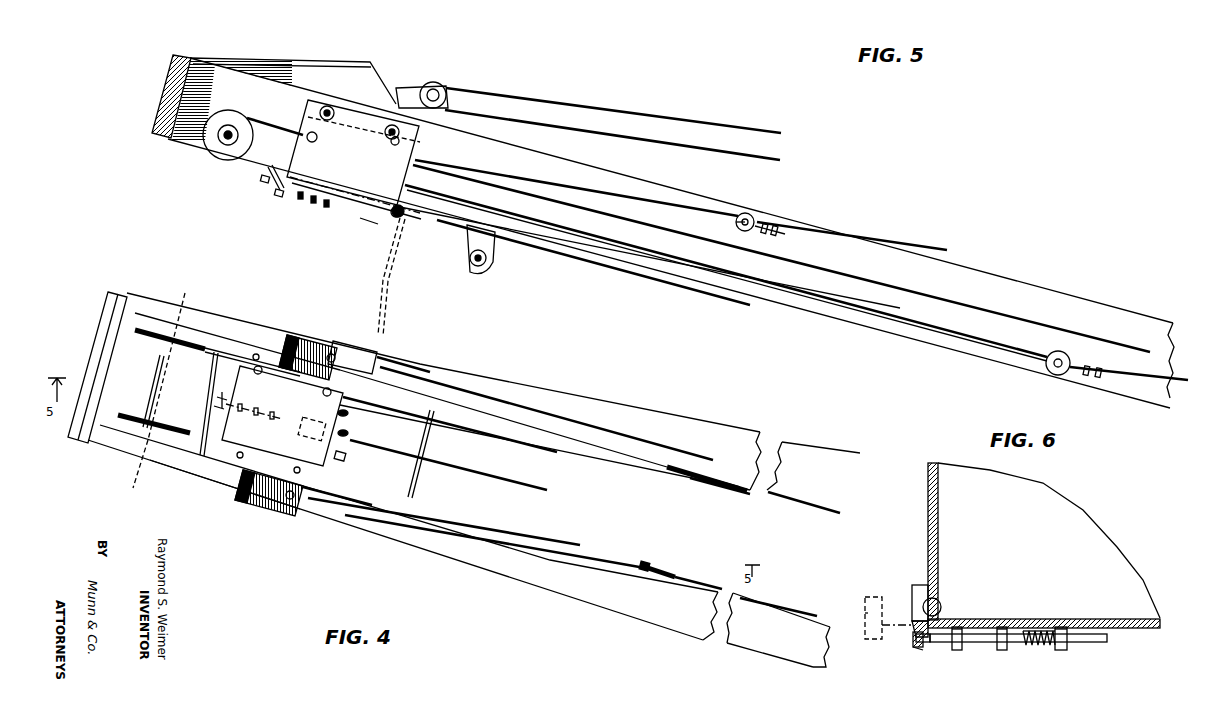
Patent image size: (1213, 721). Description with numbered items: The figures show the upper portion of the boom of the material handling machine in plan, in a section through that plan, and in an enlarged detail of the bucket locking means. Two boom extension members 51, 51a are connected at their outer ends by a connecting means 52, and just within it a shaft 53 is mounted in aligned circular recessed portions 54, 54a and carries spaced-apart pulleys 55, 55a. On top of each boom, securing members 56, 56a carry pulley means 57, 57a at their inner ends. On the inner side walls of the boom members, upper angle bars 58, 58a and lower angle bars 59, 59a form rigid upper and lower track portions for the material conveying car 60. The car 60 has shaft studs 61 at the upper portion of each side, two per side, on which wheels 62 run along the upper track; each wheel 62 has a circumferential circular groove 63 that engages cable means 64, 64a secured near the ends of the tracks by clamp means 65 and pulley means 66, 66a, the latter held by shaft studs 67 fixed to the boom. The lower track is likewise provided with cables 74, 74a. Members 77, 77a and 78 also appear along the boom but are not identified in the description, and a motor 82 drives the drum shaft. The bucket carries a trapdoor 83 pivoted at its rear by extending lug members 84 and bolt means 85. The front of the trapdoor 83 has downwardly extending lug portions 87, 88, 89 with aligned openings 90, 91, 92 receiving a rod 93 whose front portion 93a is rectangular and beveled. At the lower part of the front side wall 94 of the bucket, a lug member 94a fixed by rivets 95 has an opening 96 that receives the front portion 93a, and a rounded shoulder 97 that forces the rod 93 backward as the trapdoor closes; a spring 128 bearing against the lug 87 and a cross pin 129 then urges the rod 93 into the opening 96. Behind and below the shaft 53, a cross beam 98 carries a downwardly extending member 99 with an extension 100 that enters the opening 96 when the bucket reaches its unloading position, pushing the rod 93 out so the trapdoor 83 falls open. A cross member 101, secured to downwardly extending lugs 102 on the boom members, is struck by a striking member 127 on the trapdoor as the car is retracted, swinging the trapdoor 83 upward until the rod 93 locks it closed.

In FIG. 4, the boom extension member 51 is at (592, 601).
In FIG. 5, the boom extension member 51a is at (1034, 300).
In FIG. 4, the boom extension member 51a is at (632, 420).
In FIG. 5, the connecting means 52 is at (165, 90).
In FIG. 4, the connecting means 52 is at (100, 361).
In FIG. 5, the shaft 53 is at (230, 125).
In FIG. 4, the shaft 53 is at (158, 390).
In FIG. 4, the circular recessed portion 54 is at (140, 472).
In FIG. 4, the circular recessed portion 54a is at (174, 357).
In FIG. 4, the pulley 55 is at (116, 423).
In FIG. 5, the pulley 55a is at (222, 152).
In FIG. 4, the pulley 55a is at (150, 330).
In FIG. 4, the securing member 56 is at (195, 478).
In FIG. 5, the securing member 56a is at (296, 60).
In FIG. 4, the securing member 56a is at (224, 336).
In FIG. 4, the pulley means 57 is at (318, 510).
In FIG. 5, the pulley means 57a is at (434, 82).
In FIG. 4, the pulley means 57a is at (350, 356).
In FIG. 4, the upper angle bar 58 is at (602, 558).
In FIG. 5, the upper angle bar 58a is at (632, 195).
In FIG. 4, the upper angle bar 58a is at (617, 460).
In FIG. 4, the lower angle bar 59 is at (710, 580).
In FIG. 5, the lower angle bar 59a is at (846, 308).
In FIG. 4, the lower angle bar 59a is at (727, 488).
In FIG. 5, the car 60 is at (352, 160).
In FIG. 5, the shaft stud 61 is at (328, 106).
In FIG. 4, the shaft stud 61 is at (258, 374).
In FIG. 5, the wheel 62 is at (316, 140).
In FIG. 4, the wheel 62 is at (257, 354).
In FIG. 4, the circular groove 63 is at (297, 467).
In FIG. 4, the cable means 64 is at (668, 565).
In FIG. 5, the cable means 64a is at (856, 236).
In FIG. 4, the cable means 64a is at (713, 478).
In FIG. 5, the clamp means 65 is at (786, 233).
In FIG. 4, the pulley means 66 is at (643, 570).
In FIG. 5, the pulley means 66a is at (750, 214).
In FIG. 4, the pulley means 66a is at (678, 477).
In FIG. 5, the shaft stud 67 is at (735, 222).
In FIG. 4, the cable 74 is at (785, 606).
In FIG. 5, the cable 74a is at (1165, 374).
In FIG. 4, the cable 74a is at (814, 510).
In FIG. 4, the rod 77 is at (484, 522).
In FIG. 5, the rod 77a is at (290, 128).
In FIG. 4, the rod 77a is at (490, 433).
In FIG. 4, the rod 78 is at (388, 447).
In FIG. 4, the motor 82 is at (257, 404).
In FIG. 5, the trapdoor 83 is at (348, 211).
In FIG. 6, the trapdoor 83 is at (1073, 618).
In FIG. 5, the lug member 84 is at (390, 220).
In FIG. 4, the lug member 84 is at (348, 458).
In FIG. 5, the bolt means 85 is at (396, 205).
In FIG. 6, the lug portion 87 is at (1062, 651).
In FIG. 6, the lug portion 88 is at (1003, 651).
In FIG. 6, the lug portion 89 is at (957, 651).
In FIG. 6, the opening 90 is at (1058, 628).
In FIG. 6, the opening 91 is at (1002, 629).
In FIG. 6, the opening 92 is at (957, 629).
In FIG. 6, the rod 93 is at (984, 643).
In FIG. 6, the front portion of rod 93a is at (932, 648).
In FIG. 6, the front side wall 94 is at (928, 540).
In FIG. 6, the lug member 94a is at (912, 594).
In FIG. 6, the rivet 95 is at (941, 601).
In FIG. 6, the opening 96 is at (912, 642).
In FIG. 6, the rounded shoulder 97 is at (913, 651).
In FIG. 5, the cross beam 98 is at (275, 162).
In FIG. 4, the cross beam 98 is at (214, 377).
In FIG. 5, the downwardly extending member 99 is at (263, 182).
In FIG. 6, the downwardly extending member 99 is at (865, 613).
In FIG. 5, the extension 100 is at (278, 196).
In FIG. 4, the extension 100 is at (214, 407).
In FIG. 6, the extension 100 is at (897, 636).
In FIG. 5, the cross member 101 is at (480, 266).
In FIG. 4, the cross member 101 is at (420, 478).
In FIG. 5, the downwardly extending lug 102 is at (500, 254).
In FIG. 5, the striking member 127 is at (368, 228).
In FIG. 6, the spring 128 is at (1040, 655).
In FIG. 6, the cross pin 129 is at (1026, 620).